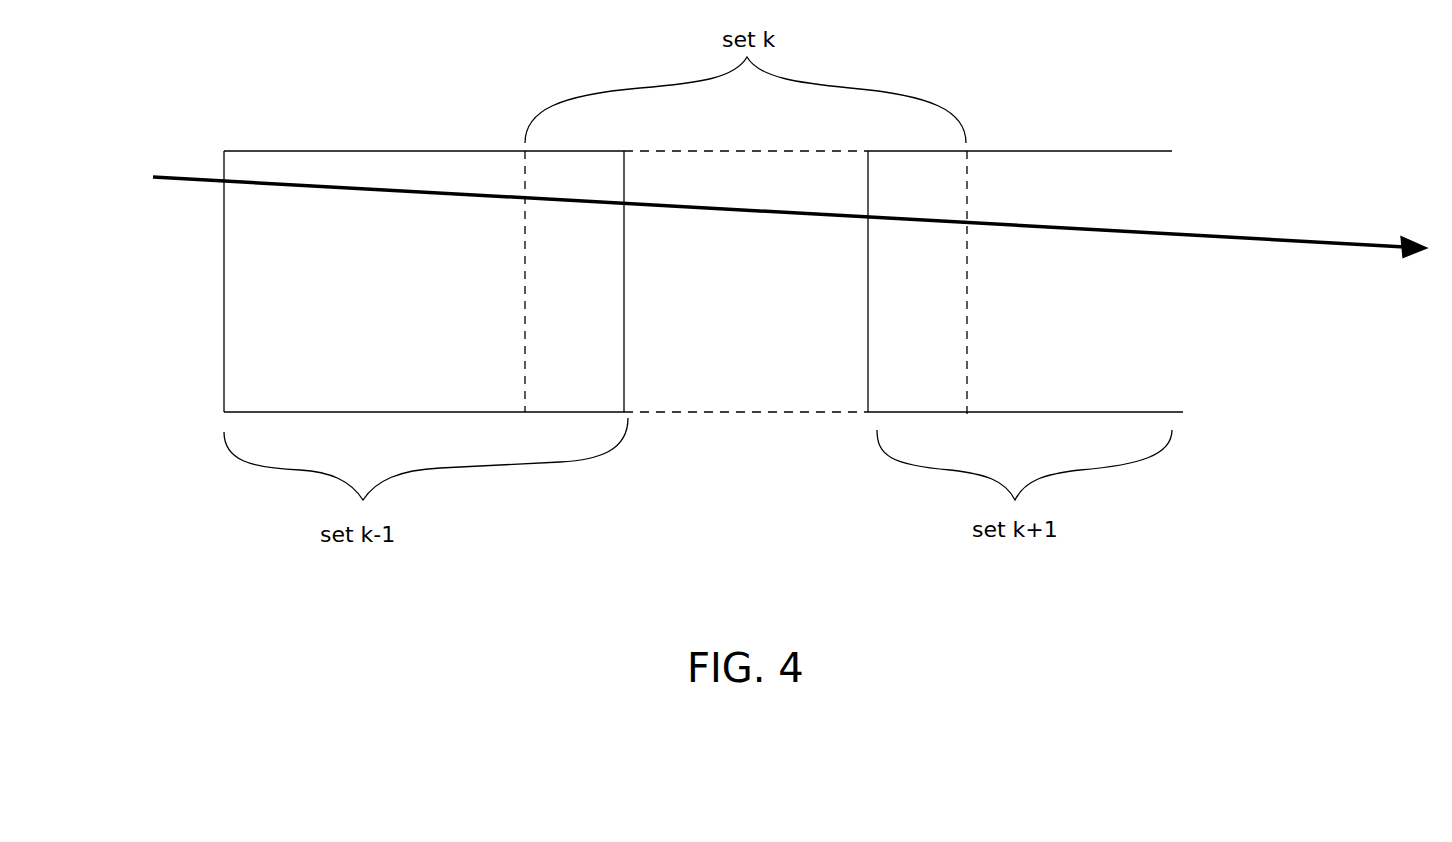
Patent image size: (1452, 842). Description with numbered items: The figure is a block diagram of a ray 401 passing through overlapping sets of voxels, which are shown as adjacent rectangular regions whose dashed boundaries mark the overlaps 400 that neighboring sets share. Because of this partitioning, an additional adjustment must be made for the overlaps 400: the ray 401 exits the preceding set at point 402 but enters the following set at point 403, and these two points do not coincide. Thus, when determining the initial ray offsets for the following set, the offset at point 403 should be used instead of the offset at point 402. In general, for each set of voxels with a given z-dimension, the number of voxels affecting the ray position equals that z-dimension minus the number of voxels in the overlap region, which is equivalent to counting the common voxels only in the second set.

The overlaps 400 is at (888, 383).
The ray 401 is at (1310, 243).
The exit point 402 is at (644, 237).
The entry point 403 is at (508, 226).